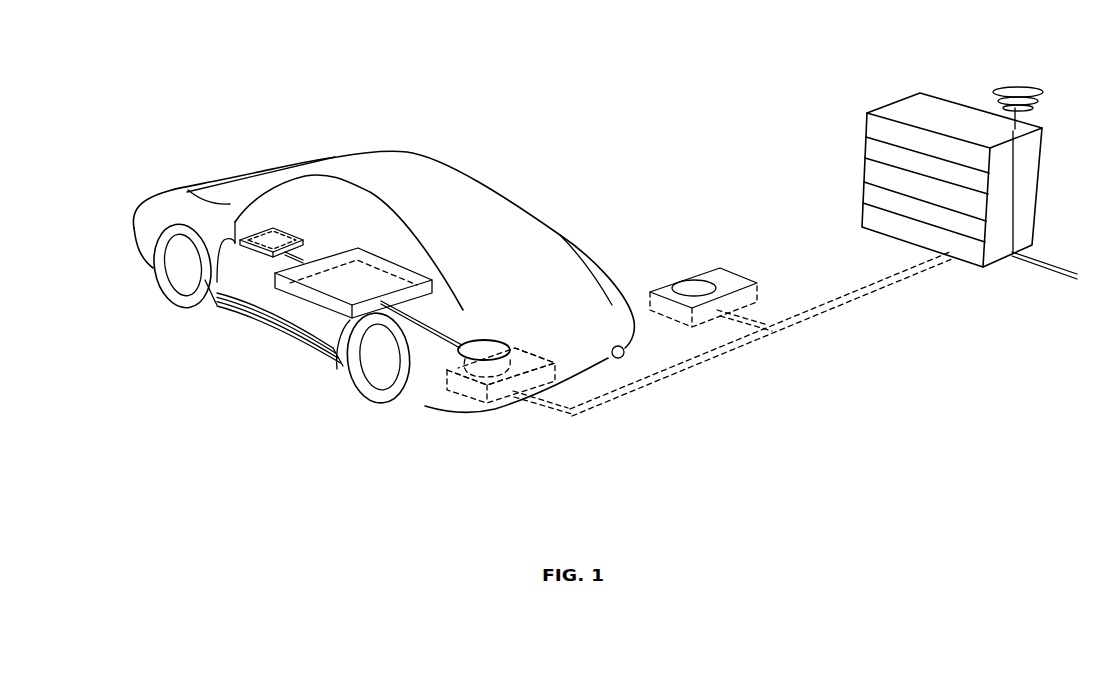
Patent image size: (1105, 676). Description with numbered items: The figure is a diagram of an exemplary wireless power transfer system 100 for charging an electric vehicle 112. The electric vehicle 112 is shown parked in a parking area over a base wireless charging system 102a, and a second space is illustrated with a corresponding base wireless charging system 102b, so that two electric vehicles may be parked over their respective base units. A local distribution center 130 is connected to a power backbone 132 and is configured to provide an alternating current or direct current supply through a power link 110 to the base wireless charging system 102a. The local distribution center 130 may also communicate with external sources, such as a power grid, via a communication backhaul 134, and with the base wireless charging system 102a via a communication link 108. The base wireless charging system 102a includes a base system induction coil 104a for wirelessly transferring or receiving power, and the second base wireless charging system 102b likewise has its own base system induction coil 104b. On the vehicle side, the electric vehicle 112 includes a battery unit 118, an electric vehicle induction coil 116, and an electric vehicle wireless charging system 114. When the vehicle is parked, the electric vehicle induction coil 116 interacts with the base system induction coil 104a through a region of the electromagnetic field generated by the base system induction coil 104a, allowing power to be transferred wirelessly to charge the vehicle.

The wireless power transfer system 100 is at (377, 46).
The base wireless charging system 102a is at (455, 362).
The base wireless charging system 102b is at (665, 290).
The base system induction coil 104a is at (518, 348).
The base system induction coil 104b is at (702, 283).
The communication link 108 is at (853, 292).
The power link 110 is at (848, 305).
The electric vehicle 112 is at (227, 176).
The electric vehicle wireless charging system 114 is at (286, 281).
The electric vehicle induction coil 116 is at (486, 343).
The battery unit 118 is at (284, 233).
The local distribution center 130 is at (893, 107).
The power backbone 132 is at (1053, 272).
The communication backhaul 134 is at (1019, 86).